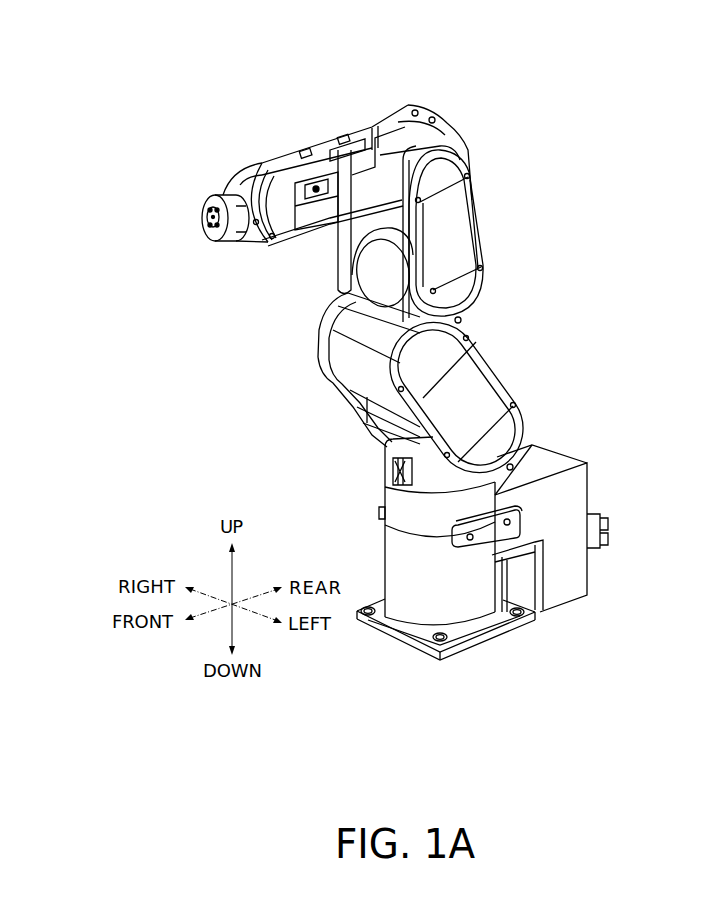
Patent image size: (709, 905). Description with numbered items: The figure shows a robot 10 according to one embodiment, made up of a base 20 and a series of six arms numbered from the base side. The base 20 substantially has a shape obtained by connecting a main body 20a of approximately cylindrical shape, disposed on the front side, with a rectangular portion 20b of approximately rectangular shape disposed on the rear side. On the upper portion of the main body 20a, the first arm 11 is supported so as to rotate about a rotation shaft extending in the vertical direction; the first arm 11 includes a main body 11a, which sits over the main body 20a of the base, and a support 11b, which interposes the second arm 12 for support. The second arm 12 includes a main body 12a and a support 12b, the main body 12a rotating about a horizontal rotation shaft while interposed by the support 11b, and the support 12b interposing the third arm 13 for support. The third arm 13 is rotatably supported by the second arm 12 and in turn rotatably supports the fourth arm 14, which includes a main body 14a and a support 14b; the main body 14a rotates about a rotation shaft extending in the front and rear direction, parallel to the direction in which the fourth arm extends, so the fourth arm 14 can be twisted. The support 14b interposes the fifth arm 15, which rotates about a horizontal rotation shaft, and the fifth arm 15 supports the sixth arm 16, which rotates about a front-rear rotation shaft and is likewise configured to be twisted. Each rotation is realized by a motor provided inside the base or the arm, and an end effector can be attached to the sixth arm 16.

The robot 10 is at (582, 156).
The first arm 11 is at (244, 432).
The main body 11a is at (395, 452).
The support 11b is at (323, 377).
The second arm 12 is at (497, 243).
The main body 12a is at (357, 332).
The support 12b is at (457, 233).
The third arm 13 is at (430, 135).
The fourth arm 14 is at (181, 270).
The main body 14a is at (325, 227).
The support 14b is at (270, 225).
The fifth arm 15 is at (246, 162).
The sixth arm 16 is at (204, 203).
The base 20 is at (636, 634).
The main body 20a is at (478, 608).
The rectangular portion 20b is at (552, 572).